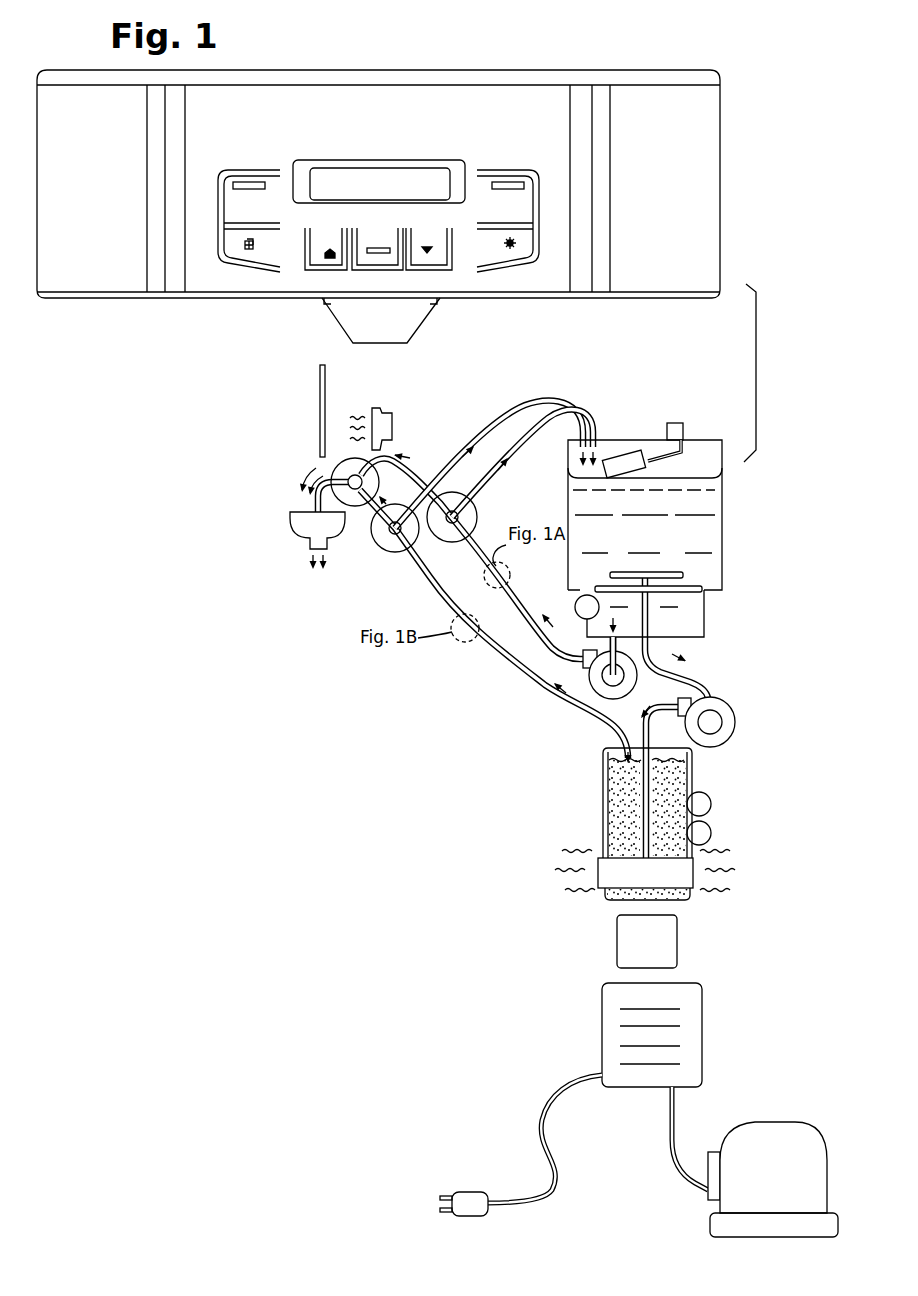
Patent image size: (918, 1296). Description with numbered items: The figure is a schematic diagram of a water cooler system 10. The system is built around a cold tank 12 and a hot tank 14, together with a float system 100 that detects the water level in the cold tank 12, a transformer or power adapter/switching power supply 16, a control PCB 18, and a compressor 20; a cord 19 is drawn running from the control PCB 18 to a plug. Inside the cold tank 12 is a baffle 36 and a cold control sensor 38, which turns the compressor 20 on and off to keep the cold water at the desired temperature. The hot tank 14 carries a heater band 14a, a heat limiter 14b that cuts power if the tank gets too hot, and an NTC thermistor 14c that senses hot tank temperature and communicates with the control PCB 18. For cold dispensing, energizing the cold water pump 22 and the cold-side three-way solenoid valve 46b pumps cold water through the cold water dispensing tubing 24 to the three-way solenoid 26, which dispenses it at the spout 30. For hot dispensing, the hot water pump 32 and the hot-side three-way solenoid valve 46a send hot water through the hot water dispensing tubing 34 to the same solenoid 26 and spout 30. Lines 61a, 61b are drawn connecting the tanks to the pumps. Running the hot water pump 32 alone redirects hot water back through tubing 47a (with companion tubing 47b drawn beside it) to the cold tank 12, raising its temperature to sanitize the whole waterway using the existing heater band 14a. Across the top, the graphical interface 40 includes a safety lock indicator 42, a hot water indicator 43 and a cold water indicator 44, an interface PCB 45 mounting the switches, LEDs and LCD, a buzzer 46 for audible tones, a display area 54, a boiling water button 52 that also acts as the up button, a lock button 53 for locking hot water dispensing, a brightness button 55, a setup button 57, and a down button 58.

The water cooler system 10 is at (780, 289).
The cold tank 12 is at (704, 531).
The hot tank 14 is at (677, 771).
The heater band 14a is at (700, 881).
The heat limiter 14b is at (711, 833).
The NTC thermistor 14c is at (711, 803).
The transformer or power adapter/switching power supply 16 is at (680, 933).
The control PCB 18 is at (693, 1021).
The power cord 19 is at (545, 1144).
The compressor 20 is at (782, 1183).
The cold water pump 22 is at (605, 692).
The cold water dispensing tubing 24 is at (417, 467).
The 3-way solenoid 26 is at (336, 472).
The spout 30 is at (292, 529).
The hot water pump 32 is at (736, 721).
The hot water dispensing tubing 34 is at (497, 665).
The baffle 36 is at (693, 581).
The cold control sensor 38 is at (580, 615).
The graphical interface 40 is at (567, 48).
The safety lock indicator 42 is at (418, 330).
The hot water indicator 43 is at (243, 181).
The cold water indicator 44 is at (503, 181).
The interface PCB 45 is at (318, 392).
The buzzer 46 is at (383, 407).
The hot-side 3-way solenoid valve 46a is at (378, 545).
The cold-side 3-way solenoid valve 46b is at (443, 538).
The tubing 47a is at (517, 404).
The return tube 47b is at (539, 417).
The boiling water button 52 is at (320, 262).
The lock button 53 is at (243, 247).
The display area 54 is at (360, 196).
The brightness button 55 is at (520, 243).
The setup button 57 is at (378, 247).
The down button 58 is at (435, 258).
The tube 61a is at (705, 668).
The tube 61b is at (638, 808).
The float system 100 is at (688, 418).